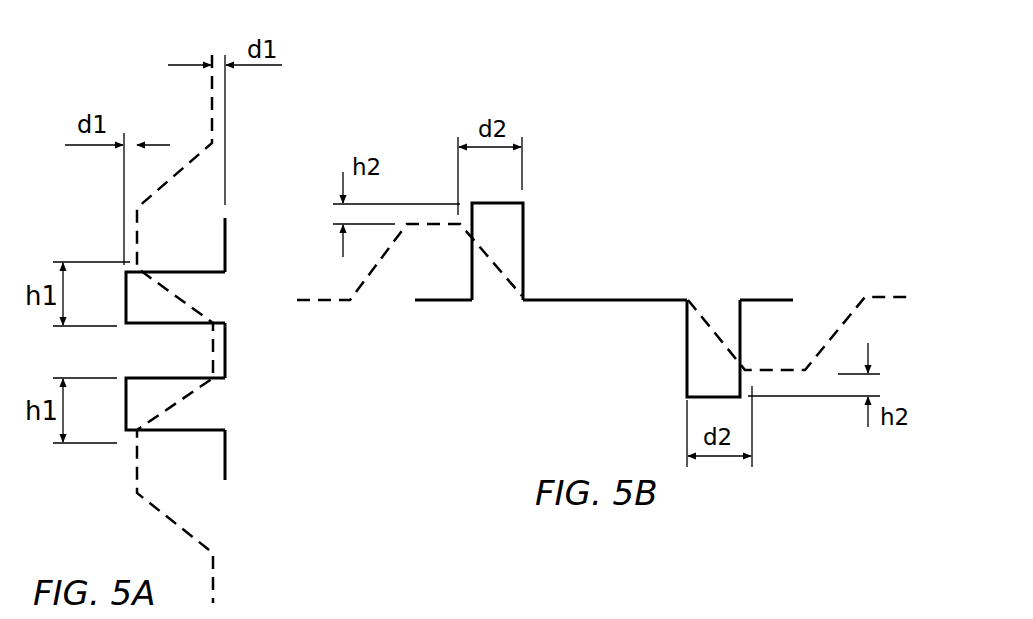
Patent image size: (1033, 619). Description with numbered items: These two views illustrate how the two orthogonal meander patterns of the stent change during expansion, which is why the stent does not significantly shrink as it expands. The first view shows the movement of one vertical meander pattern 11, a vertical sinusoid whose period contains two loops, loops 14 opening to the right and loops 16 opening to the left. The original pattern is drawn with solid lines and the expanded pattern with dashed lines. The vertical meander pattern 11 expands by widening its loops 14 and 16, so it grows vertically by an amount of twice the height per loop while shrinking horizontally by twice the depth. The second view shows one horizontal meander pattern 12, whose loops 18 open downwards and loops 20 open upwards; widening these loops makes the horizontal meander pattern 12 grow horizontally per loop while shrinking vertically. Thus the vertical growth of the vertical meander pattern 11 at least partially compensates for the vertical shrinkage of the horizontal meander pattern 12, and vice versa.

In FIG. 5A, the vertical meander pattern 11 is at (155, 106).
In FIG. 5B, the horizontal meander pattern 12 is at (646, 188).
In FIG. 5A, the loop 14 is at (161, 319).
In FIG. 5A, the loop 16 is at (203, 369).
In FIG. 5B, the loop 18 is at (512, 236).
In FIG. 5B, the loop 20 is at (726, 389).